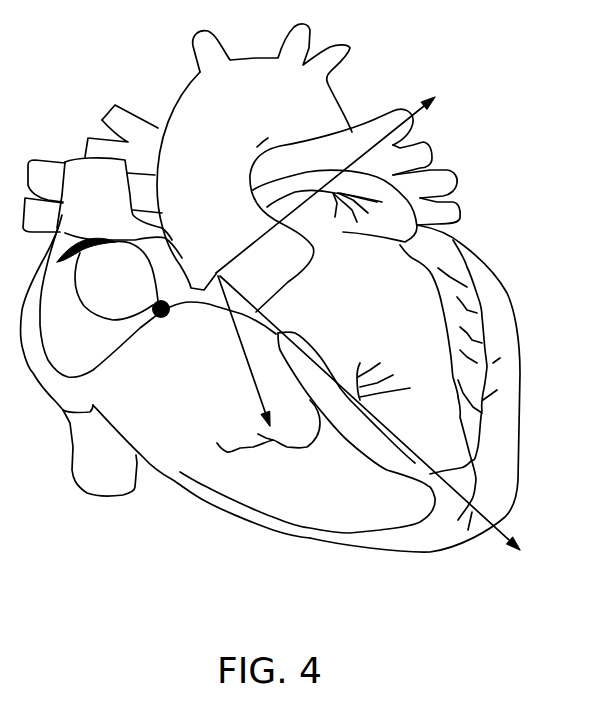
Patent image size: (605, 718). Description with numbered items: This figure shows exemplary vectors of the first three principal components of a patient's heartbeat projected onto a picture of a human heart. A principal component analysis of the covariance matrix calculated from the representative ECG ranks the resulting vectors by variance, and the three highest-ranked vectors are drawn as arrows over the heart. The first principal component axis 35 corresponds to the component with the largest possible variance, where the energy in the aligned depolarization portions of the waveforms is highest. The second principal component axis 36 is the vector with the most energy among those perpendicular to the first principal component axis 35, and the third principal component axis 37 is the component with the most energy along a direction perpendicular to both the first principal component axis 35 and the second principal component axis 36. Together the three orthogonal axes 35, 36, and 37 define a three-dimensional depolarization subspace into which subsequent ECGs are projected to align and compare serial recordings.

The first principal component axis 35 is at (507, 533).
The second principal component axis 36 is at (385, 138).
The third principal component axis 37 is at (247, 371).